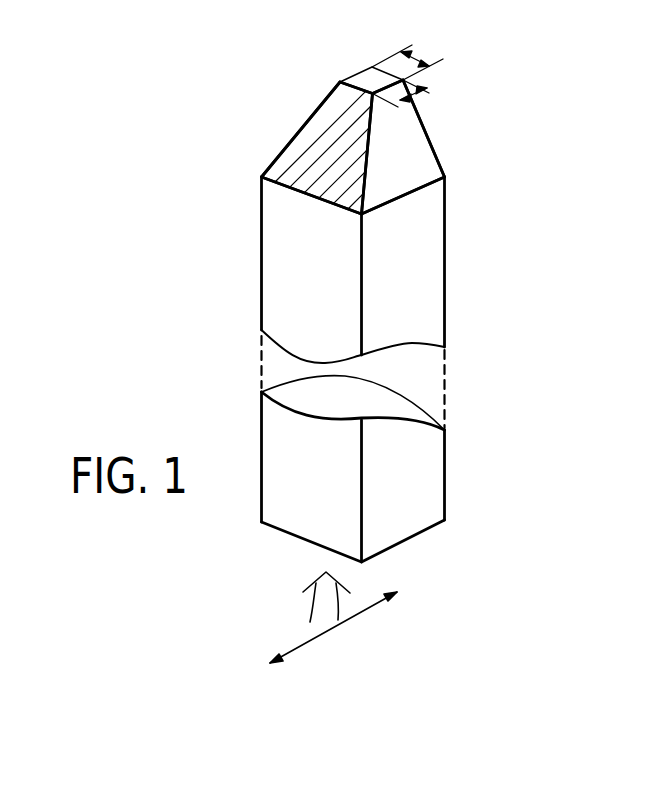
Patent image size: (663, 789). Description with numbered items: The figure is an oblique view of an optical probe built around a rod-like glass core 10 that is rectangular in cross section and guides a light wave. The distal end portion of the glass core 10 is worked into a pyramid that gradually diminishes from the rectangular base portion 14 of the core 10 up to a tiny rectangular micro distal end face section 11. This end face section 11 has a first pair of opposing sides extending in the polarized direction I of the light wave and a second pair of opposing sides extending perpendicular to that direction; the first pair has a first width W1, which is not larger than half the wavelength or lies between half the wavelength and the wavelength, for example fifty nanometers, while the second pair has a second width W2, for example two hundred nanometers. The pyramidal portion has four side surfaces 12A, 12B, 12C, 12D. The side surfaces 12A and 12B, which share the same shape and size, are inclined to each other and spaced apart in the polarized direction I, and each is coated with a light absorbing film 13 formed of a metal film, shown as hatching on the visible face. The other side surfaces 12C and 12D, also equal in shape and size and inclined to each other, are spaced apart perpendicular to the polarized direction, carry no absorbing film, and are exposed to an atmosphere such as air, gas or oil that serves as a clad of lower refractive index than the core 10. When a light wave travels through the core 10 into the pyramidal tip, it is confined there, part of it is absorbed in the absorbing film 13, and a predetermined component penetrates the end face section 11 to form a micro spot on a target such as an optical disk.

The glass core 10 is at (436, 277).
The micro distal end face section 11 is at (373, 78).
The side surface 12A is at (310, 148).
The side surface 12B is at (434, 134).
The side surface 12C is at (318, 107).
The side surface 12D is at (423, 170).
The light absorbing film 13 is at (317, 196).
The rectangular base portion 14 is at (268, 258).
The first width W1 is at (432, 90).
The second width W2 is at (412, 54).
The polarized direction I is at (330, 630).